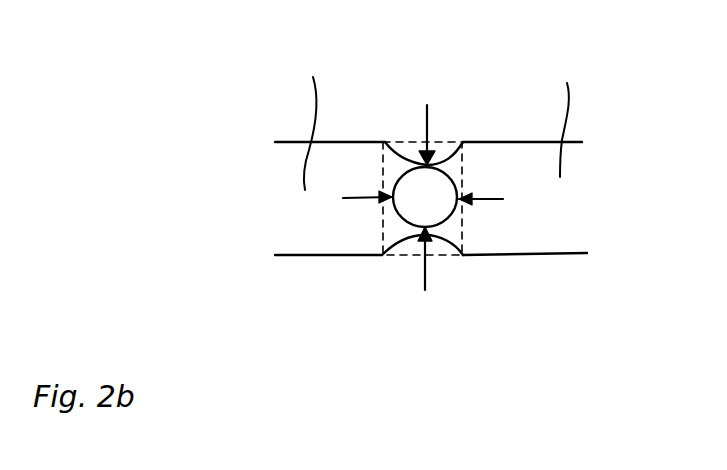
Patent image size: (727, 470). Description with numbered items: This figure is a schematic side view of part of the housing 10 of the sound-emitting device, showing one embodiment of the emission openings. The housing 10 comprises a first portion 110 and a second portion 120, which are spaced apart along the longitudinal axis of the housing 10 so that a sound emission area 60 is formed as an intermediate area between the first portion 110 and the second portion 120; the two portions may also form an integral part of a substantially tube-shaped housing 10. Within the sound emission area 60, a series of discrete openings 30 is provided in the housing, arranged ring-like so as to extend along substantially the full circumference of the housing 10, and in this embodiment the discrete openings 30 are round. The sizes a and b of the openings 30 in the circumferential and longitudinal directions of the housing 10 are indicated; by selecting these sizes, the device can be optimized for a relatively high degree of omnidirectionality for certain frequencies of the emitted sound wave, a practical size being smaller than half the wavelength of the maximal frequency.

The housing 10 is at (242, 83).
The first portion 110 is at (330, 149).
The second portion 120 is at (525, 153).
The discrete openings 30 is at (410, 138).
The sound emission area 60 is at (408, 297).
The size in circumferential direction a is at (434, 201).
The size in longitudinal direction b is at (425, 120).